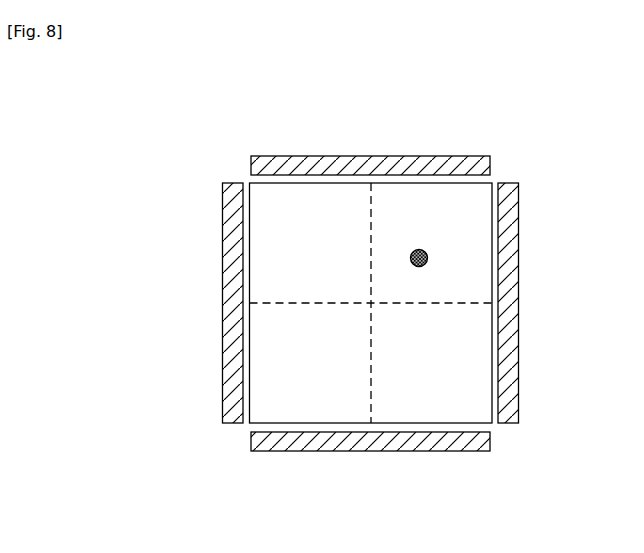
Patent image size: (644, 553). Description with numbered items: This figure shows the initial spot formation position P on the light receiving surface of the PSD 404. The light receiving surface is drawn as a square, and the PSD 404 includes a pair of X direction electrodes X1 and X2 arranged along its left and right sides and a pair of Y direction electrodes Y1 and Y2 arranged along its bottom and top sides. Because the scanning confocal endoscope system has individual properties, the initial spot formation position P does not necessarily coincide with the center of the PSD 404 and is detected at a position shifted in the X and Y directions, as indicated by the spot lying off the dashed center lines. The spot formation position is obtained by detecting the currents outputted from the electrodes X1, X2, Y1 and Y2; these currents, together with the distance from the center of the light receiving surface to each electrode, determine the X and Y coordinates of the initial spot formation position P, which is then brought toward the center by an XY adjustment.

The PSD 404 is at (372, 284).
The Y direction electrode Y2 is at (363, 156).
The Y direction electrode Y1 is at (378, 451).
The X direction electrode X1 is at (222, 305).
The X direction electrode X2 is at (519, 302).
The initial spot formation position P is at (428, 252).